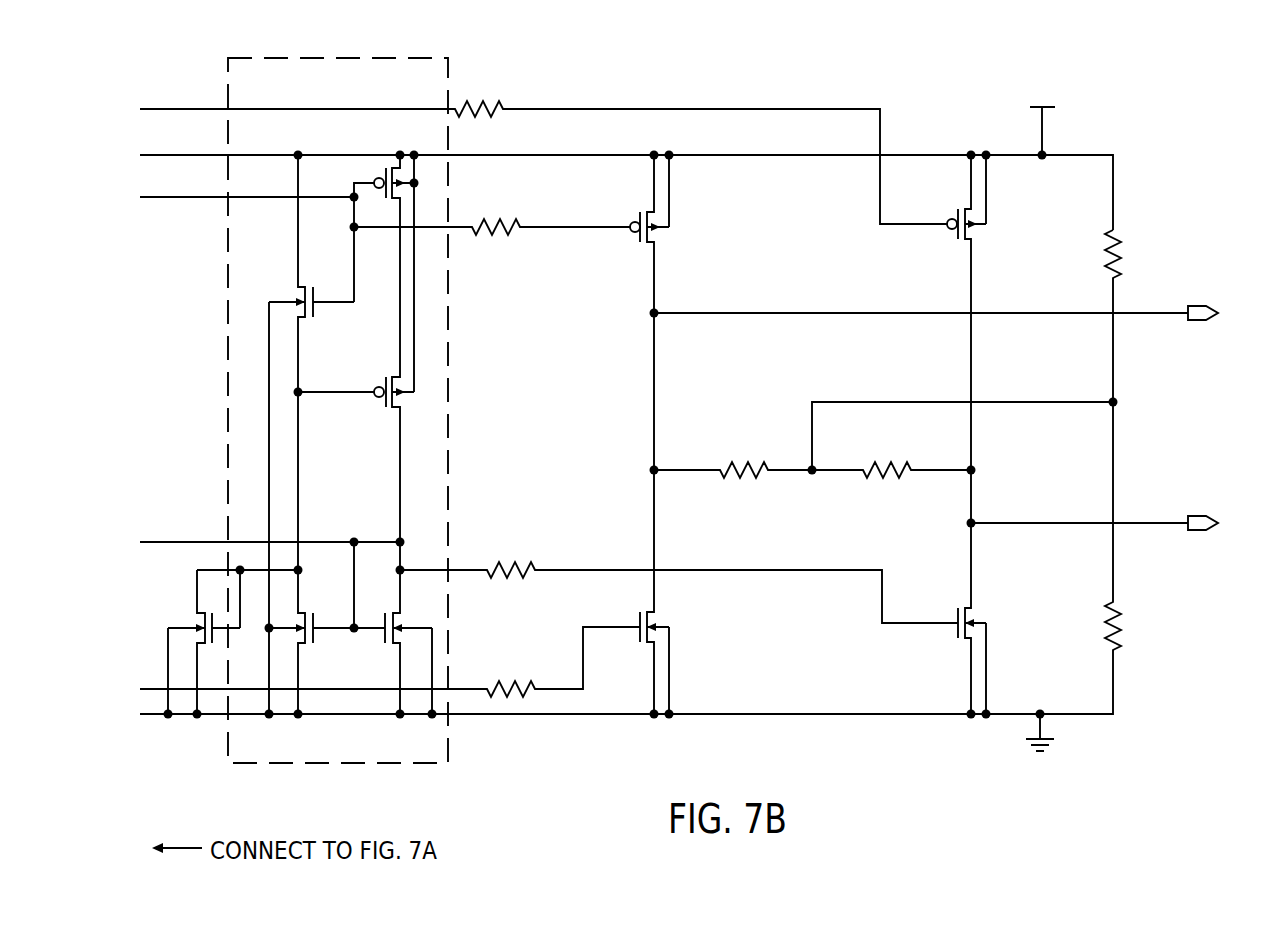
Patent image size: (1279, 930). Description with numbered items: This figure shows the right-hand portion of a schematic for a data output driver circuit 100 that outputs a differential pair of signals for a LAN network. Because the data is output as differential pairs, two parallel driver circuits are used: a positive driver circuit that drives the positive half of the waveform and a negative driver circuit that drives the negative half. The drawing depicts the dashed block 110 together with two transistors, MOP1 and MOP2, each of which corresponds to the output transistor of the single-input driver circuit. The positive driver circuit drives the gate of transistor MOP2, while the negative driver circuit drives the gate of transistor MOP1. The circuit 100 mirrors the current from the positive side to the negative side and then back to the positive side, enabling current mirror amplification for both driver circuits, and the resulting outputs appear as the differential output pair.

The data output driver circuit 100 is at (699, 72).
The bias sub-circuit (dashed block) 110 is at (417, 752).
The transistor MOP1 is at (636, 251).
The transistor MOP2 is at (952, 249).